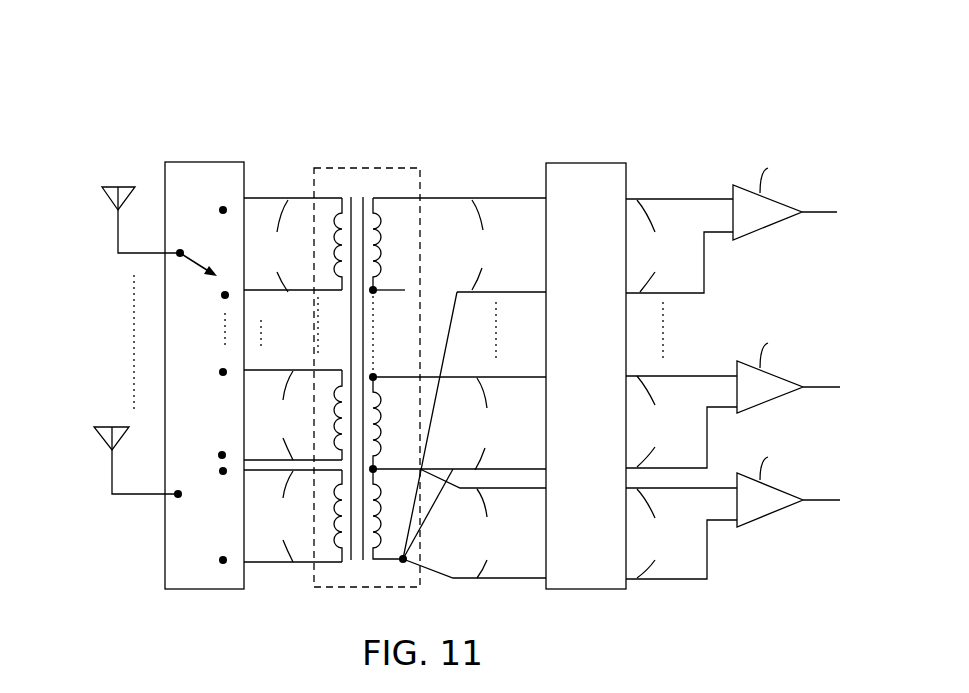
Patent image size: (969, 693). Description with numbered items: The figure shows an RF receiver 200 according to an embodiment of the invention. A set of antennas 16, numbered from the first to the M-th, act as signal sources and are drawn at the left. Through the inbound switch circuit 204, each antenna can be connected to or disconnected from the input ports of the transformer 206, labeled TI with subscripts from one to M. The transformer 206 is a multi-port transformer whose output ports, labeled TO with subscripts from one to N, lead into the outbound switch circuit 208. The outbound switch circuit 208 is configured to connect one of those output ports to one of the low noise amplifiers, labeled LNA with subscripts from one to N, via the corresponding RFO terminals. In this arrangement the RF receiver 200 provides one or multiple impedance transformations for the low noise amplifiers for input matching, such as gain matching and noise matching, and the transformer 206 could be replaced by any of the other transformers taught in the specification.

The RF receiver 200 is at (377, 109).
The antennas 16 is at (117, 230).
The inbound switch circuit 204 is at (185, 162).
The transformer 206 is at (370, 168).
The outbound switch circuit 208 is at (601, 380).